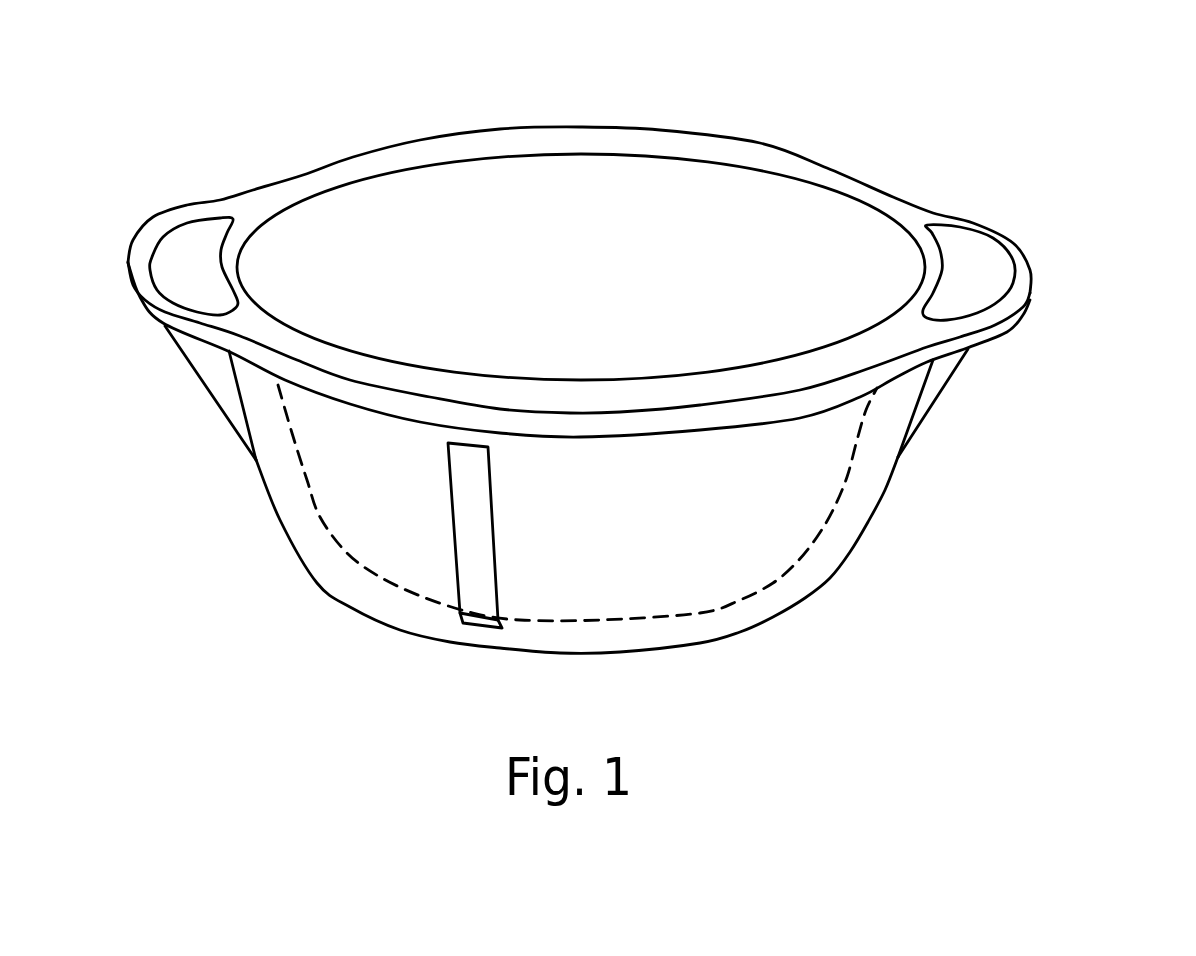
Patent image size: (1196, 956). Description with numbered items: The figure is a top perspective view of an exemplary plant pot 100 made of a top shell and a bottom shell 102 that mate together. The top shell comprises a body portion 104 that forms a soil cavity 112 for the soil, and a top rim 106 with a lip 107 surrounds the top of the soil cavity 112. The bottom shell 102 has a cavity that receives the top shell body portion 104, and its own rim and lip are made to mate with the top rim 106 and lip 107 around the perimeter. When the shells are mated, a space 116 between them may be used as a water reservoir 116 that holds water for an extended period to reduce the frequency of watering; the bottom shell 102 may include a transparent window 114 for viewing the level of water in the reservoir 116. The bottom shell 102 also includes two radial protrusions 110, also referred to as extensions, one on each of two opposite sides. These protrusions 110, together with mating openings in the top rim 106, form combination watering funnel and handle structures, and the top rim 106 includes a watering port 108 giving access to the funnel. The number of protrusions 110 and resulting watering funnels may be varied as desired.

The plant pot 100 is at (963, 687).
The bottom shell 102 is at (870, 527).
The body portion 104 is at (312, 497).
The top rim 106 is at (383, 167).
The lip 107 is at (1008, 332).
The watering port 108 is at (980, 277).
The radial protrusion 110 is at (953, 383).
The soil cavity 112 is at (641, 275).
The transparent window 114 is at (457, 563).
The water reservoir 116 is at (857, 485).